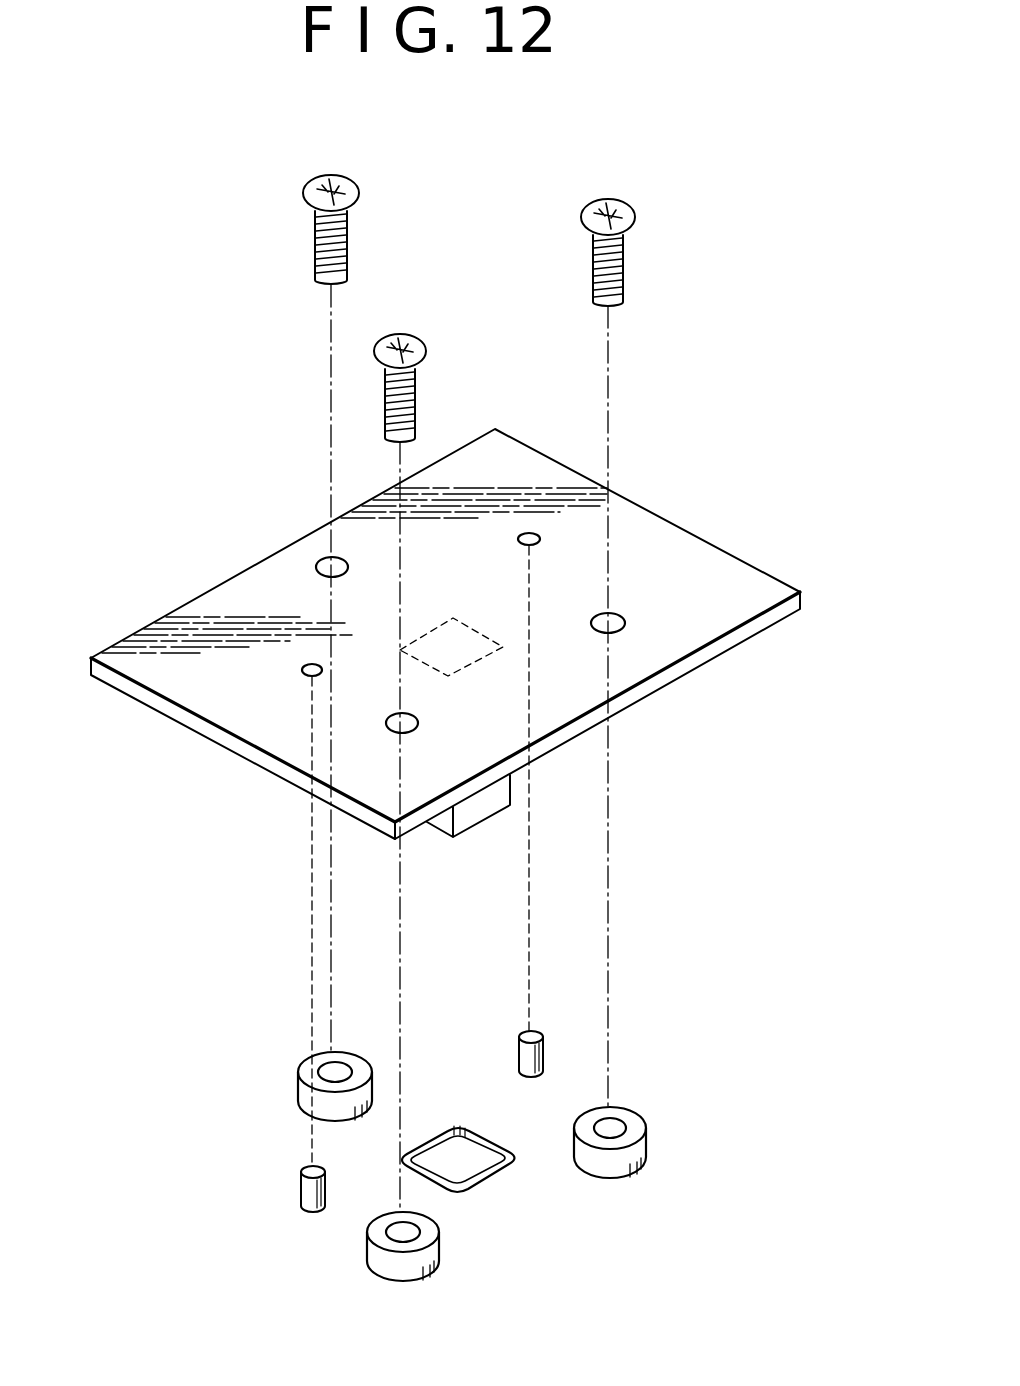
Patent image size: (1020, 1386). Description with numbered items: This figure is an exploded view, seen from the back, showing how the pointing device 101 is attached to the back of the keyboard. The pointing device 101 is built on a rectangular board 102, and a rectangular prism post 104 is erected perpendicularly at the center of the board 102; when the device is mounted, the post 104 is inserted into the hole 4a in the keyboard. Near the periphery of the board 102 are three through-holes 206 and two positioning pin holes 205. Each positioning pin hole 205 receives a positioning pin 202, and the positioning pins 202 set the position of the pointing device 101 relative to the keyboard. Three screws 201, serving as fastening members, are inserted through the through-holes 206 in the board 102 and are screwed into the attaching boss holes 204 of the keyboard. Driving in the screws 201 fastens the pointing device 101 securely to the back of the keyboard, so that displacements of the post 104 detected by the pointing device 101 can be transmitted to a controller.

The pointing device 101 is at (421, 647).
The board 102 is at (157, 676).
The post 104 is at (476, 813).
The screws 201 is at (314, 256).
The positioning pins 202 is at (300, 1191).
The attaching boss holes 204 is at (300, 1068).
The positioning pin holes 205 is at (531, 533).
The through-holes 206 is at (320, 563).
The hole 4a is at (440, 1130).